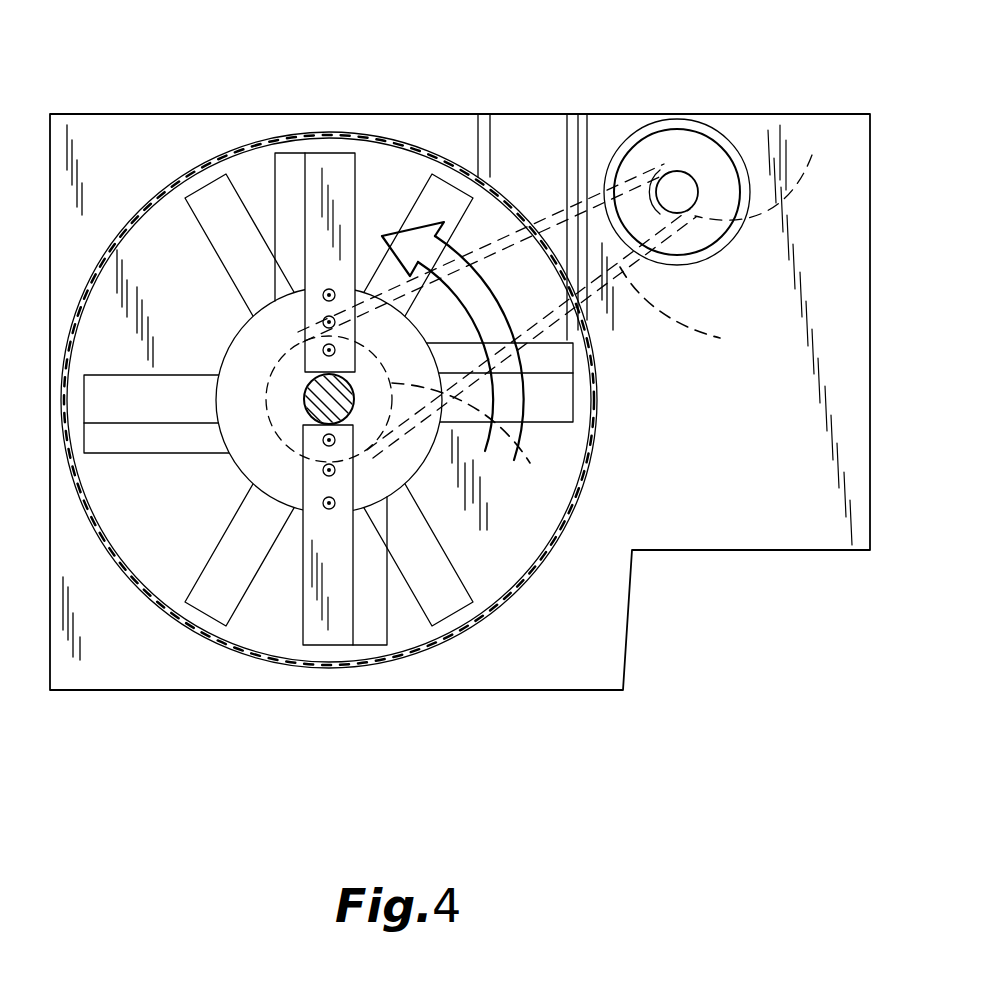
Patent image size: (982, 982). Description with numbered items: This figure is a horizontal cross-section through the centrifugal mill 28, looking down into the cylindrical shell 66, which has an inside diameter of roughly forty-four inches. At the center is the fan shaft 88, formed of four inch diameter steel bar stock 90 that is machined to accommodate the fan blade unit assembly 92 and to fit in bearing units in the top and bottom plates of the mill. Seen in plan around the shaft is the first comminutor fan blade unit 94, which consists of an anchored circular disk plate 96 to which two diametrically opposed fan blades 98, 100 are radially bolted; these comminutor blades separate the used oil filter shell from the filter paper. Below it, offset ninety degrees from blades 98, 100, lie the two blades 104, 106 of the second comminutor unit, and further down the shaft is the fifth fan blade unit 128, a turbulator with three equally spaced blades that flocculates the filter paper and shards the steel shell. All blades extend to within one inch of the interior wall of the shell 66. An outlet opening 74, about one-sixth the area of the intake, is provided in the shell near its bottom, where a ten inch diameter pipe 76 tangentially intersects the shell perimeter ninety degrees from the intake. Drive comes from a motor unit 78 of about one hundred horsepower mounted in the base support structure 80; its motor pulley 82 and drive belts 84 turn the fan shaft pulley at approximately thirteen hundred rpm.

The centrifugal mill 28 is at (295, 768).
The cylindrical shell 66 is at (248, 655).
The outlet opening 74 is at (505, 112).
The pipe 76 is at (540, 177).
The motor unit 78 is at (702, 123).
The base support structure 80 is at (693, 530).
The motor pulley 82 is at (561, 301).
The drive belts 84 is at (692, 317).
The fan shaft 88 is at (478, 446).
The steel bar stock 90 is at (316, 390).
The fan blade unit assembly 92 is at (195, 572).
The first comminutor fan blade unit 94 is at (360, 200).
The circular disk plate 96 is at (257, 460).
The fan blade 98 is at (338, 177).
The fan blade 100 is at (328, 645).
The fan blade 104 is at (120, 425).
The fan blade 106 is at (779, 335).
The fifth fan blade unit 128 is at (457, 572).